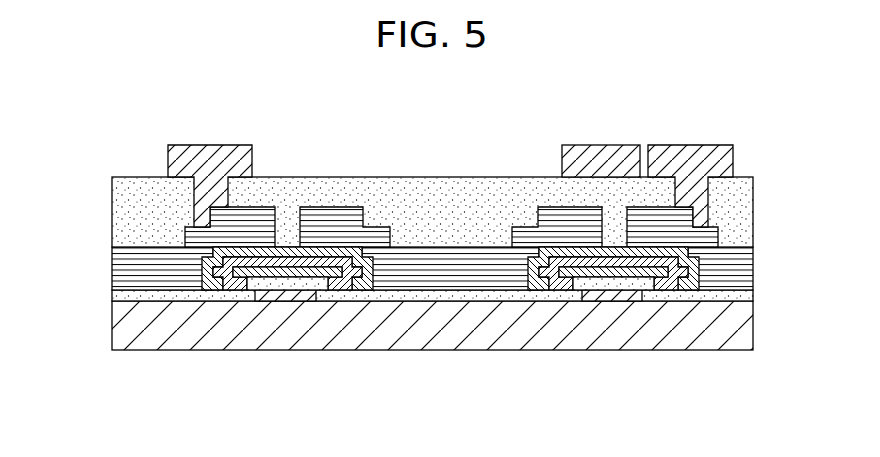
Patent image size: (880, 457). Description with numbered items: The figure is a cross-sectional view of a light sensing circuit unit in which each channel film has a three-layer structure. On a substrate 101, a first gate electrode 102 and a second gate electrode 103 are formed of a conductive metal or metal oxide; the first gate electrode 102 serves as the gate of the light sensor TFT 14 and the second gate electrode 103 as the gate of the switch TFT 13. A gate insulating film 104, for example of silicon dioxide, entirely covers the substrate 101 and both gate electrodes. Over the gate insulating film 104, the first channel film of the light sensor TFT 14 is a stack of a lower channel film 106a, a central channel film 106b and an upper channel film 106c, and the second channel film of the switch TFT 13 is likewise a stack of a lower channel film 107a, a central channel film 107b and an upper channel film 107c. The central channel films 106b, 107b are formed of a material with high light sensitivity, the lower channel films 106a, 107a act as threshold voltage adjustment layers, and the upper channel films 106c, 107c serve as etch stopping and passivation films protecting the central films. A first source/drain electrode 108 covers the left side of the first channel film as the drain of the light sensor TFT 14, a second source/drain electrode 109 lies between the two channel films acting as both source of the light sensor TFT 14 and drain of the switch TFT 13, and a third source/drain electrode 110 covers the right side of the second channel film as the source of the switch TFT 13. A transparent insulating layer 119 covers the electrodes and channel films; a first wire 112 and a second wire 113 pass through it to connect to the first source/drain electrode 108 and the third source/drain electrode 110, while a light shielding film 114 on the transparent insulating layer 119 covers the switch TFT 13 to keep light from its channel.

The substrate 101 is at (753, 322).
The first gate electrode 102 is at (286, 298).
The second gate electrode 103 is at (612, 298).
The gate insulating film 104 is at (753, 296).
The lower channel film 106a is at (246, 292).
The central channel film 106b is at (221, 290).
The upper channel film 106c is at (206, 290).
The lower channel film 107a is at (657, 292).
The central channel film 107b is at (685, 292).
The upper channel film 107c is at (707, 290).
The first source/drain electrode 108 is at (112, 268).
The second source/drain electrode 109 is at (452, 282).
The third source/drain electrode 110 is at (753, 268).
The first wire 112 is at (210, 152).
The second wire 113 is at (690, 152).
The light shielding film 114 is at (600, 152).
The transparent insulating layer 119 is at (450, 183).
The switch TFT 13 is at (558, 174).
The light sensor TFT 14 is at (269, 175).